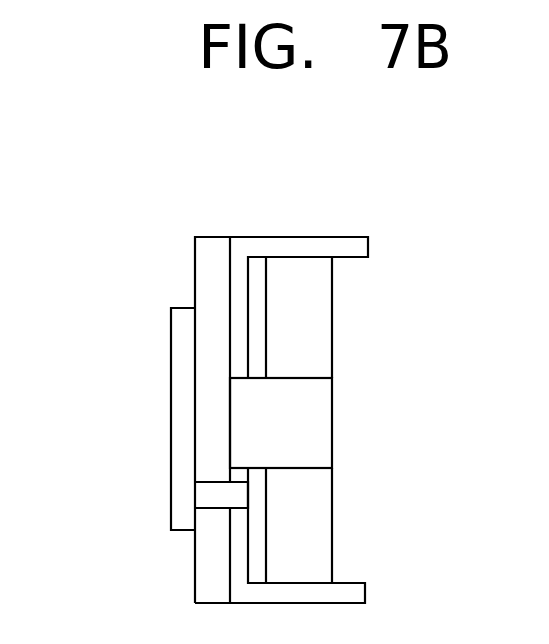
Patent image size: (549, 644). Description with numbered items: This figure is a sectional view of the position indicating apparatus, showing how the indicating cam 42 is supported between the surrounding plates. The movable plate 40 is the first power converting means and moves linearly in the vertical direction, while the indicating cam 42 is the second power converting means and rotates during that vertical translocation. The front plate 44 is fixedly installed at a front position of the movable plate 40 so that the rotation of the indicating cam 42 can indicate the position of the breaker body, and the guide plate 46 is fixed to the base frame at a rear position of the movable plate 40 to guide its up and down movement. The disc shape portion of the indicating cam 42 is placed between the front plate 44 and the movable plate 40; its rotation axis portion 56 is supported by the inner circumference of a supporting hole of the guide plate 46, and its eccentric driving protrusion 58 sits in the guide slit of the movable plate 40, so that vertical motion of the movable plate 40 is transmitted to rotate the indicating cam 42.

The front plate 44 is at (306, 246).
The guide plate 46 is at (316, 321).
The rotation axis portion 56 is at (315, 428).
The movable plate 40 is at (258, 520).
The indicating cam 42 is at (181, 392).
The driving protrusion 58 is at (207, 493).